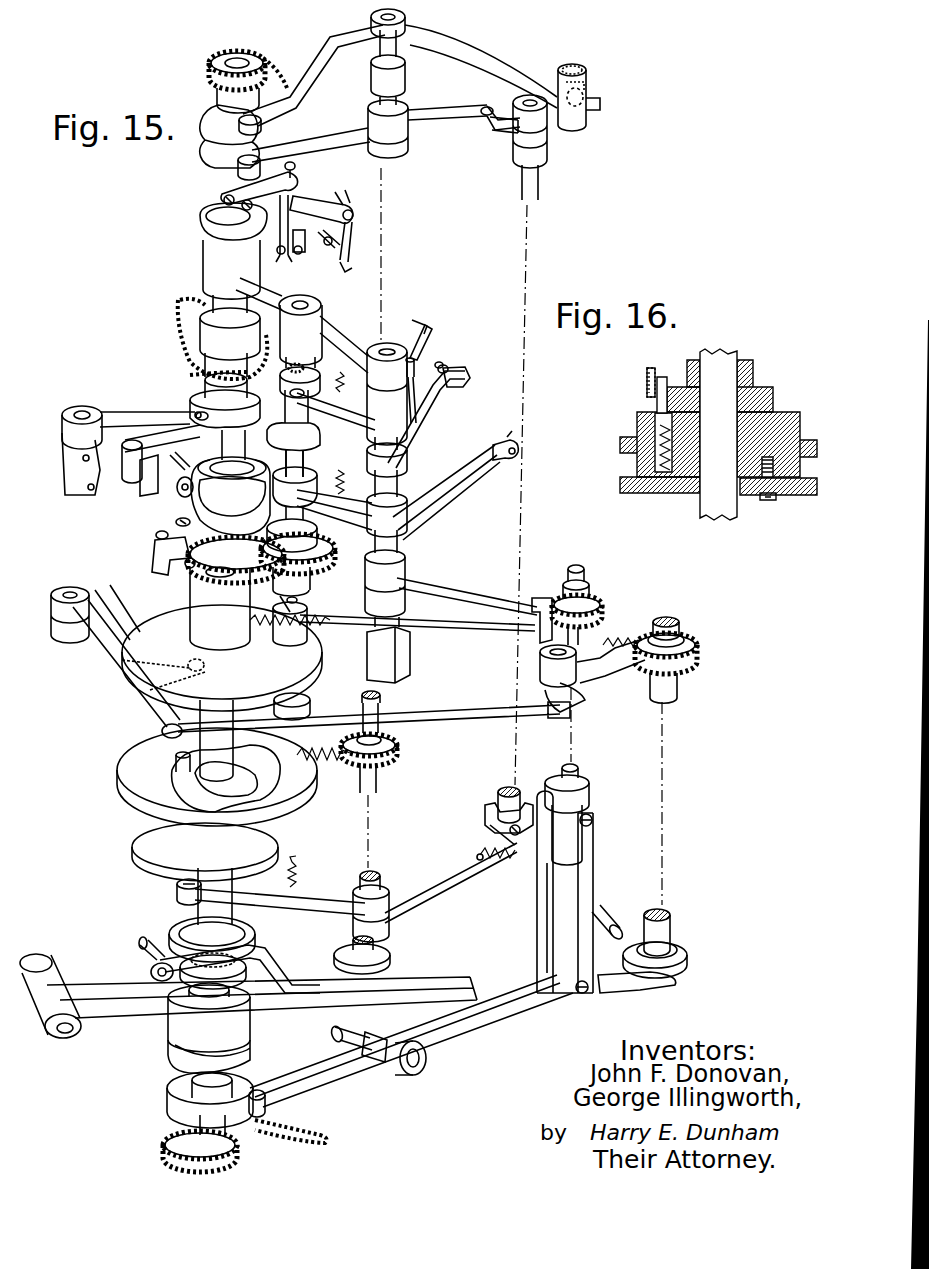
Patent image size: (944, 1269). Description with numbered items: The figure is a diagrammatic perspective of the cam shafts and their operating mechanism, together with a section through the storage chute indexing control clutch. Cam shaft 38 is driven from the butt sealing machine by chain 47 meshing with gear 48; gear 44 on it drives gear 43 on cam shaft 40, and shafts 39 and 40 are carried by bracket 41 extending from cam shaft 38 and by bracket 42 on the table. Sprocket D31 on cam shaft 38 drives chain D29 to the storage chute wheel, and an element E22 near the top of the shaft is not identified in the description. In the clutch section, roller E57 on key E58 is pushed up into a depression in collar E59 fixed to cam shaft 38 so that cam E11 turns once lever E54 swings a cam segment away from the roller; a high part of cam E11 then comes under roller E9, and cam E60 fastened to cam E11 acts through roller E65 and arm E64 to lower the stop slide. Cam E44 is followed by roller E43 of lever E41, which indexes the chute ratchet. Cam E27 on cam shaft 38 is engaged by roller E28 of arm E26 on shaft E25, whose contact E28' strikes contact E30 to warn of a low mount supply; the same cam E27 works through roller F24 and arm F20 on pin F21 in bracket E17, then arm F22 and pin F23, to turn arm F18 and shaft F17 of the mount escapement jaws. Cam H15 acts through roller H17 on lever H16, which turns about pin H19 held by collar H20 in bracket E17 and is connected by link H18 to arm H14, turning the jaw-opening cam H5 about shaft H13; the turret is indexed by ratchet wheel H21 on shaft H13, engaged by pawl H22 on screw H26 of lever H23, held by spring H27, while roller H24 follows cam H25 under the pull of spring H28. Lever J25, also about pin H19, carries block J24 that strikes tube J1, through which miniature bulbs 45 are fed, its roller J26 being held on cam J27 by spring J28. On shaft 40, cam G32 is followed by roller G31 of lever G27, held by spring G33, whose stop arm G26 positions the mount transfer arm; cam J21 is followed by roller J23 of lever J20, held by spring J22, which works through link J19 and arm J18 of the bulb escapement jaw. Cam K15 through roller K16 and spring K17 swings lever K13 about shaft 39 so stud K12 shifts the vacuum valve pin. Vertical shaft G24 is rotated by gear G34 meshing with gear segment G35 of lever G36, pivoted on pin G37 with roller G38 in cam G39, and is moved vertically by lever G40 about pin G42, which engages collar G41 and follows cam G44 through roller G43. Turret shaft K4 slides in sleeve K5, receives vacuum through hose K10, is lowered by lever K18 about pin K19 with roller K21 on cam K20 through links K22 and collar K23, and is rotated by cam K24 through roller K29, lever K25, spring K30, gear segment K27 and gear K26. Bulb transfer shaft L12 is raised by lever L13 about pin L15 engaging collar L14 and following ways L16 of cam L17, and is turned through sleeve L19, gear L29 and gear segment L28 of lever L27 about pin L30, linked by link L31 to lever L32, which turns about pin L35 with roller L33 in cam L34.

In FIG. 15, the cam shaft 38 is at (234, 62).
In FIG. 16, the cam shaft 38 is at (700, 513).
In FIG. 15, the gear E22 is at (210, 68).
In FIG. 15, the spring J28 is at (276, 72).
In FIG. 15, the cam J27 is at (215, 98).
In FIG. 15, the roller J26 is at (263, 122).
In FIG. 15, the cam H15 is at (200, 150).
In FIG. 15, the roller H17 is at (238, 172).
In FIG. 15, the roller E28 is at (208, 200).
In FIG. 15, the cam E27 is at (200, 228).
In FIG. 15, the bracket E17 is at (375, 65).
In FIG. 15, the pin H19 is at (405, 98).
In FIG. 15, the lever H16 is at (340, 135).
In FIG. 15, the link H18 is at (483, 122).
In FIG. 15, the arm H14 is at (510, 135).
In FIG. 15, the collar H20 is at (402, 159).
In FIG. 15, the cam H5 is at (548, 158).
In FIG. 15, the shaft H13 is at (526, 182).
In FIG. 15, the shaft E25 is at (295, 166).
In FIG. 15, the arm E26 is at (283, 197).
In FIG. 15, the pin F21 is at (338, 195).
In FIG. 15, the arm F20 is at (346, 203).
In FIG. 15, the shaft F17 is at (353, 217).
In FIG. 15, the arm F22 is at (352, 232).
In FIG. 15, the roller F24 is at (278, 250).
In FIG. 15, the arm F18 is at (325, 248).
In FIG. 15, the contact E28' is at (291, 263).
In FIG. 15, the contact E30 is at (302, 254).
In FIG. 15, the pin F23 is at (346, 270).
In FIG. 15, the lever J25 is at (480, 57).
In FIG. 15, the miniature bulbs 45 is at (590, 86).
In FIG. 15, the block J24 is at (602, 108).
In FIG. 15, the tube J1 is at (588, 120).
In FIG. 15, the sprocket D31 is at (188, 330).
In FIG. 15, the chain D29 is at (195, 372).
In FIG. 15, the cam E44 is at (204, 390).
In FIG. 15, the lever E41 is at (110, 414).
In FIG. 15, the roller E43 is at (195, 412).
In FIG. 15, the lever E54 is at (155, 452).
In FIG. 15, the roller E9 is at (178, 498).
In FIG. 15, the cam E11 is at (200, 510).
In FIG. 16, the cam E11 is at (630, 437).
In FIG. 15, the cam E60 is at (178, 521).
In FIG. 16, the cam E60 is at (630, 495).
In FIG. 15, the roller E65 is at (157, 535).
In FIG. 15, the arm E64 is at (150, 558).
In FIG. 15, the pin L35 is at (73, 586).
In FIG. 15, the gear 44 is at (190, 572).
In FIG. 15, the cam G32 is at (290, 372).
In FIG. 15, the roller G31 is at (290, 395).
In FIG. 15, the cam J21 is at (285, 400).
In FIG. 15, the cam K15 is at (288, 470).
In FIG. 15, the roller J23 is at (323, 438).
In FIG. 15, the cam shaft 40 is at (300, 466).
In FIG. 15, the spring K17 is at (343, 486).
In FIG. 15, the roller K16 is at (320, 533).
In FIG. 15, the gear 43 is at (333, 557).
In FIG. 15, the bracket 41 is at (365, 348).
In FIG. 15, the stop arm G26 is at (430, 332).
In FIG. 15, the lever G27 is at (416, 367).
In FIG. 15, the link J19 is at (450, 368).
In FIG. 15, the arm J18 is at (471, 380).
In FIG. 15, the spring J22 is at (410, 380).
In FIG. 15, the spring G33 is at (345, 380).
In FIG. 15, the lever J20 is at (435, 408).
In FIG. 15, the stud K12 is at (510, 440).
In FIG. 15, the lever K13 is at (462, 478).
In FIG. 15, the shaft 39 is at (395, 556).
In FIG. 16, the roller E57 is at (650, 368).
In FIG. 16, the key E58 is at (657, 405).
In FIG. 16, the collar E59 is at (760, 390).
In FIG. 15, the cam L34 is at (128, 624).
In FIG. 15, the roller L33 is at (190, 662).
In FIG. 15, the lever L32 is at (125, 696).
In FIG. 15, the roller K29 is at (280, 601).
In FIG. 15, the spring K30 is at (275, 625).
In FIG. 15, the cam K24 is at (350, 592).
In FIG. 15, the pin G37 is at (312, 697).
In FIG. 15, the roller G38 is at (176, 762).
In FIG. 15, the lever G36 is at (262, 745).
In FIG. 15, the gear segment G35 is at (318, 758).
In FIG. 15, the cam G39 is at (125, 805).
In FIG. 15, the cam H25 is at (135, 850).
In FIG. 15, the spring H28 is at (298, 868).
In FIG. 15, the gear segment K27 is at (542, 596).
In FIG. 15, the shaft K4 is at (586, 575).
In FIG. 15, the sleeve K5 is at (590, 594).
In FIG. 15, the gear K26 is at (604, 607).
In FIG. 15, the gear segment L28 is at (622, 640).
In FIG. 15, the lever K25 is at (462, 628).
In FIG. 15, the bracket 42 is at (412, 668).
In FIG. 15, the pin L30 is at (541, 652).
In FIG. 15, the lever L27 is at (612, 672).
In FIG. 15, the shaft G24 is at (382, 697).
In FIG. 15, the link L31 is at (470, 728).
In FIG. 15, the gear G34 is at (398, 752).
In FIG. 15, the collar K23 is at (590, 806).
In FIG. 15, the ratchet wheel H21 is at (487, 806).
In FIG. 15, the pawl H22 is at (508, 833).
In FIG. 15, the sleeve L19 is at (685, 641).
In FIG. 15, the gear L29 is at (698, 662).
In FIG. 15, the shaft L12 is at (678, 697).
In FIG. 15, the roller H24 is at (177, 893).
In FIG. 15, the cam G44 is at (170, 931).
In FIG. 15, the roller G43 is at (240, 940).
In FIG. 15, the pin G42 is at (148, 953).
In FIG. 15, the pin L15 is at (49, 957).
In FIG. 15, the lever G40 is at (270, 967).
In FIG. 15, the cam L17 is at (170, 1028).
In FIG. 15, the lever L13 is at (620, 995).
In FIG. 15, the ways L16 is at (170, 1053).
In FIG. 15, the cam K20 is at (250, 1080).
In FIG. 15, the roller K21 is at (268, 1112).
In FIG. 15, the chain 47 is at (290, 1133).
In FIG. 15, the gear 48 is at (238, 1156).
In FIG. 15, the lever H23 is at (325, 895).
In FIG. 15, the screw H26 is at (528, 860).
In FIG. 15, the spring H27 is at (490, 862).
In FIG. 15, the links K22 is at (537, 913).
In FIG. 15, the collar G41 is at (392, 961).
In FIG. 15, the pin K19 is at (340, 1040).
In FIG. 15, the lever K18 is at (460, 1037).
In FIG. 15, the flexible hose K10 is at (604, 925).
In FIG. 15, the collar L14 is at (688, 956).